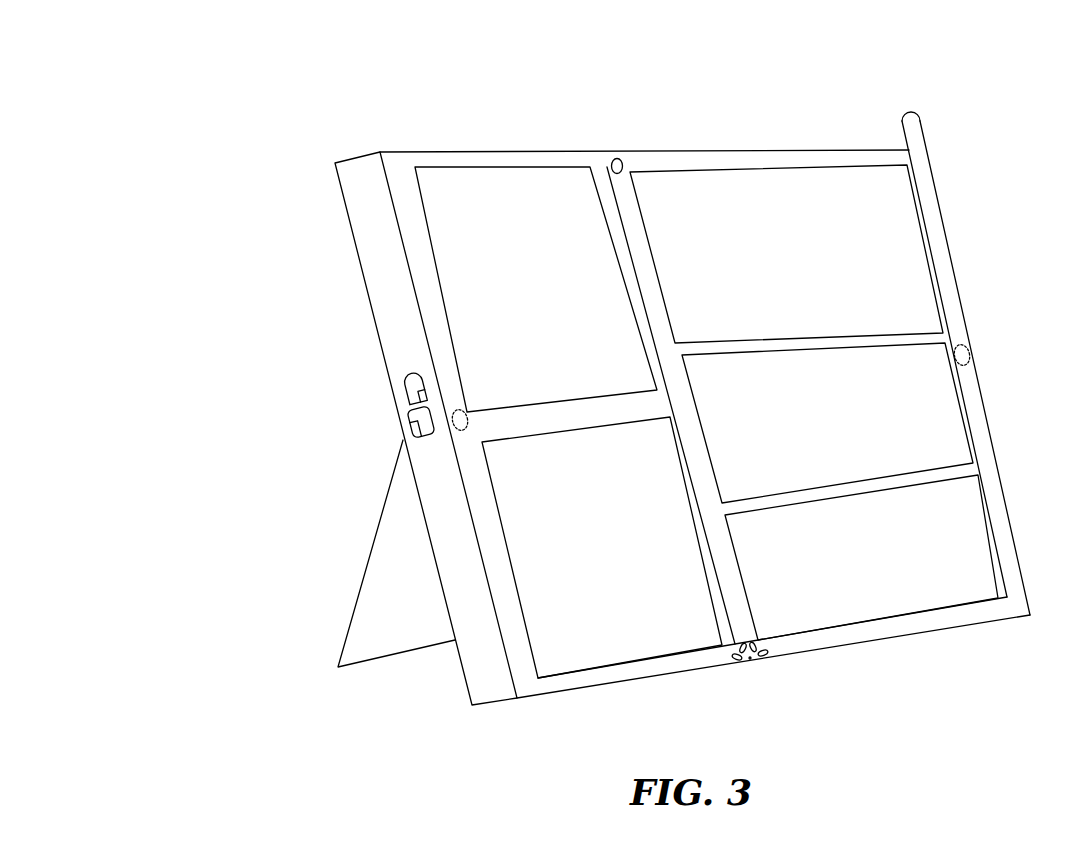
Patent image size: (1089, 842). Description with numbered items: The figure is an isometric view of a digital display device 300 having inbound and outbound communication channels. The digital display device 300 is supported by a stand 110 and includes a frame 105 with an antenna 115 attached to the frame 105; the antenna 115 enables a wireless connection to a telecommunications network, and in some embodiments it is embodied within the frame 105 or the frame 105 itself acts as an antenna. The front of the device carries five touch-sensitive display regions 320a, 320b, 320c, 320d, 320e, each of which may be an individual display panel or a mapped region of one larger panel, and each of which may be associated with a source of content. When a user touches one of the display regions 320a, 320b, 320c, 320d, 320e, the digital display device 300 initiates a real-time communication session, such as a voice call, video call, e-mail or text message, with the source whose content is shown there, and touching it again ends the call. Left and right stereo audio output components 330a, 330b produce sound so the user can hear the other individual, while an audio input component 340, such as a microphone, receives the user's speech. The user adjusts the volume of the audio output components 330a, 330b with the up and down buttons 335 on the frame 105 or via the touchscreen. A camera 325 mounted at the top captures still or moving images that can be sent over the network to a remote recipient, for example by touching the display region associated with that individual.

The digital display device 300 is at (220, 111).
The frame 105 is at (378, 346).
The stand 110 is at (373, 558).
The antenna 115 is at (921, 137).
The touch-sensitive display region 320a is at (495, 190).
The touch-sensitive display region 320b is at (640, 630).
The touch-sensitive display region 320c is at (898, 243).
The touch-sensitive display region 320d is at (936, 398).
The touch-sensitive display region 320e is at (962, 535).
The camera 325 is at (617, 168).
The audio output component 330a is at (462, 432).
The audio output component 330b is at (964, 355).
The up and down buttons 335 is at (420, 432).
The audio input component 340 is at (748, 660).